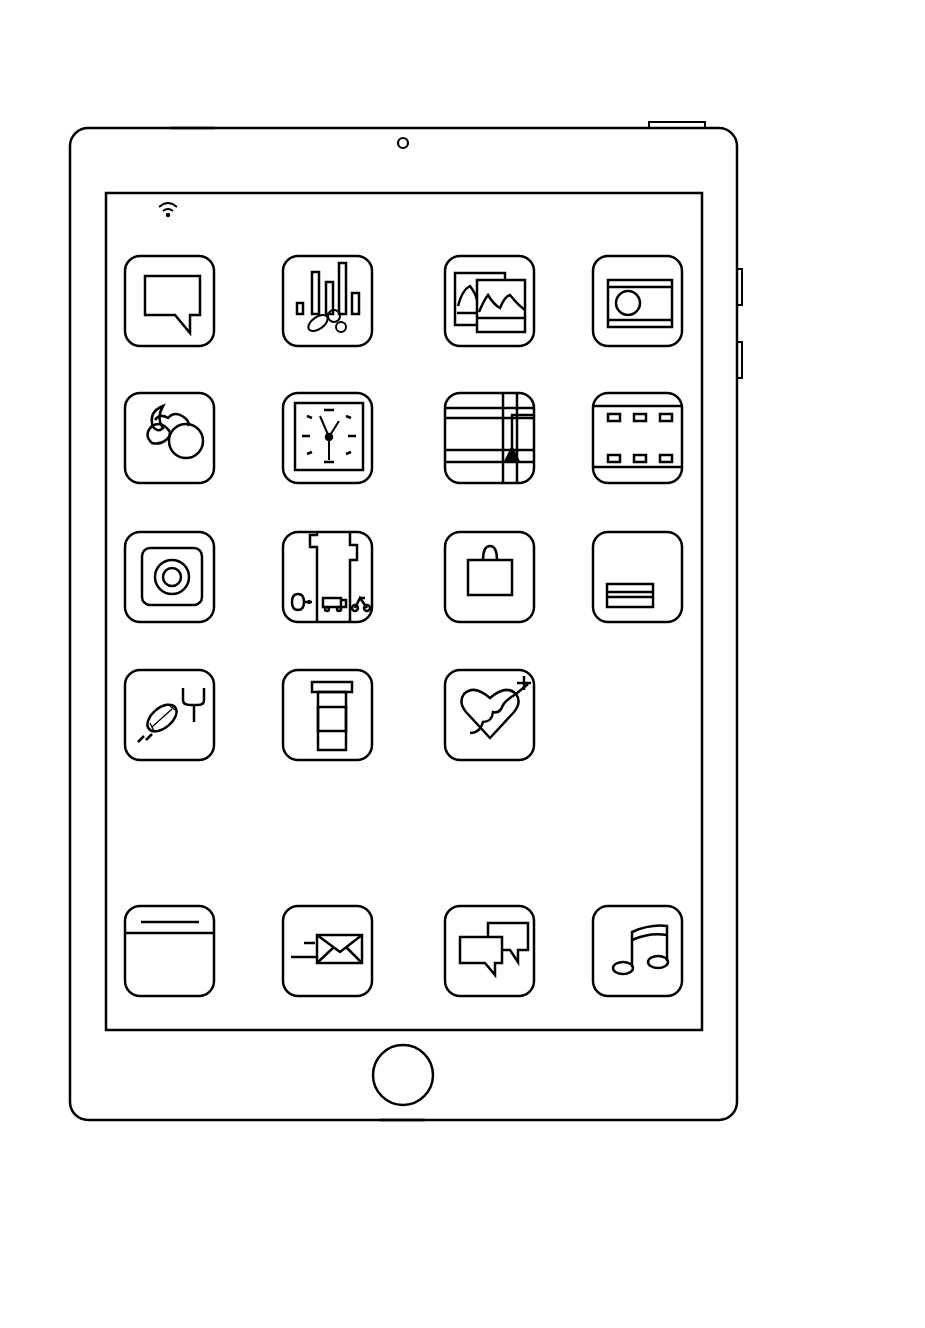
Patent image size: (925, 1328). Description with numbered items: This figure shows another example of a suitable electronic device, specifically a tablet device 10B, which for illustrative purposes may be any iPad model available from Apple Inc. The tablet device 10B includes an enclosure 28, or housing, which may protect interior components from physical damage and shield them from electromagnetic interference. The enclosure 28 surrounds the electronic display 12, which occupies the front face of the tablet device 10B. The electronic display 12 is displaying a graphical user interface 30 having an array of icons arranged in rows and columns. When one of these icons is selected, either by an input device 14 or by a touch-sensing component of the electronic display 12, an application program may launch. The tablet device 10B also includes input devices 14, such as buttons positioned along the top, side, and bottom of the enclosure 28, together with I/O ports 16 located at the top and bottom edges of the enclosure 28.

The tablet device 10B is at (165, 58).
The electronic display 12 is at (703, 612).
The input devices 14 is at (676, 122).
The I/O ports 16 is at (193, 127).
The enclosure 28 is at (737, 625).
The graphical user interface 30 is at (657, 729).